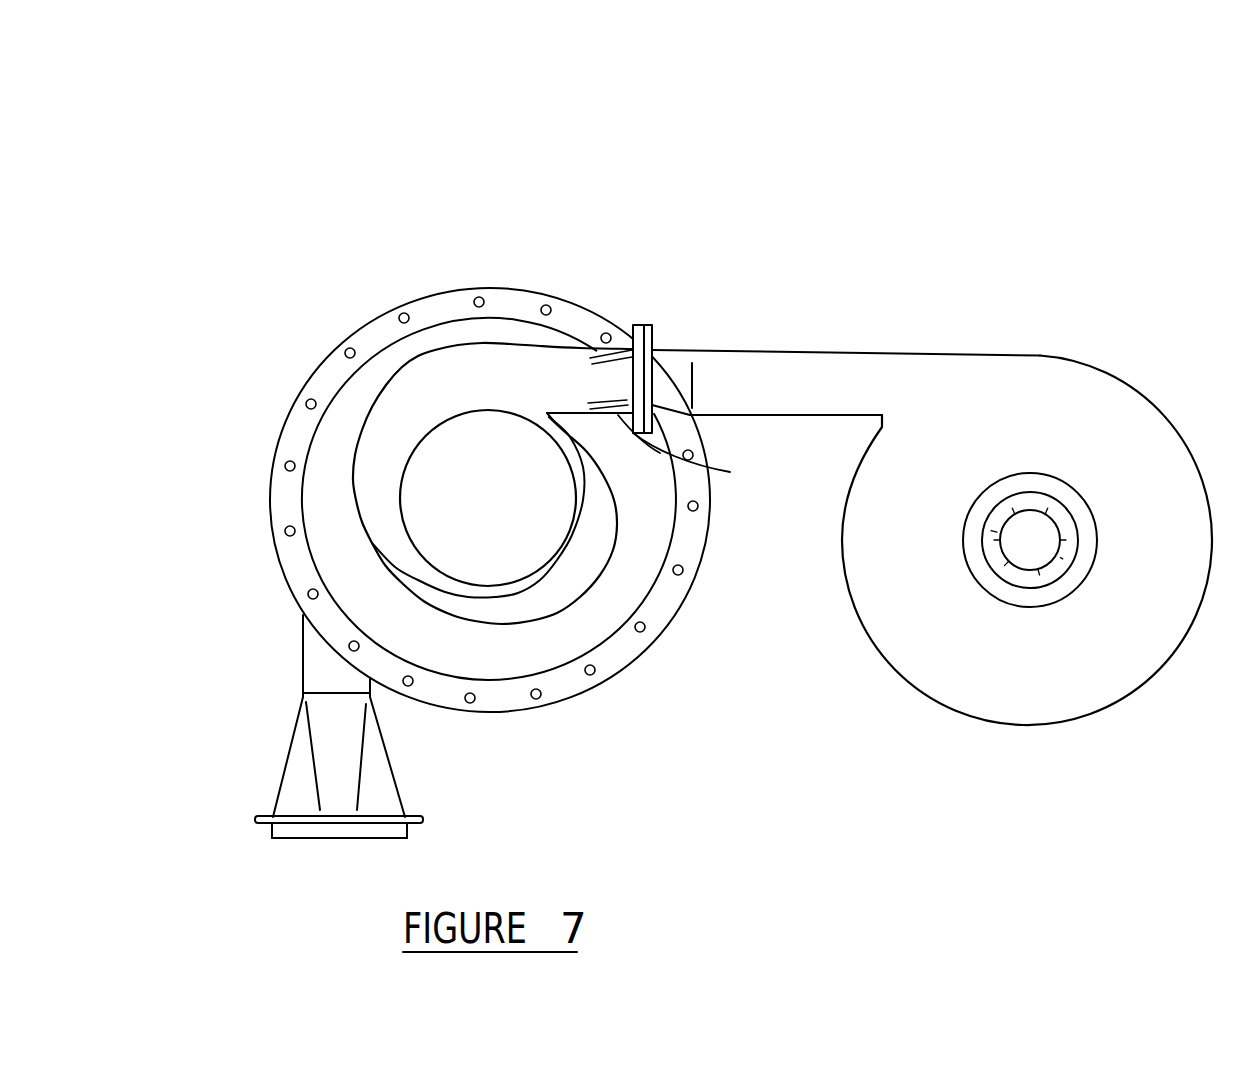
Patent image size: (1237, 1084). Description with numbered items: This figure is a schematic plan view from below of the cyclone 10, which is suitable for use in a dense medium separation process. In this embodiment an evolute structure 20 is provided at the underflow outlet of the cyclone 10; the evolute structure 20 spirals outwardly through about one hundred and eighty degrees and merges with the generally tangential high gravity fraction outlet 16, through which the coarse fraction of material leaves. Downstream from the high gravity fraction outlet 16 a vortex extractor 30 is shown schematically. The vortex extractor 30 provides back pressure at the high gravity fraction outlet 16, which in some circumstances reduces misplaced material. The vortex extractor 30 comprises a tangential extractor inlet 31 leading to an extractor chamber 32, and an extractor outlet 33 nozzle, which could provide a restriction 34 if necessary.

The cyclone 10 is at (822, 202).
The high gravity fraction outlet 16 is at (732, 472).
The evolute structure 20 is at (572, 352).
The vortex extractor 30 is at (1003, 266).
The tangential extractor inlet 31 is at (902, 402).
The extractor chamber 32 is at (1088, 427).
The extractor outlet nozzle 33 is at (1042, 542).
The restriction 34 is at (1042, 583).